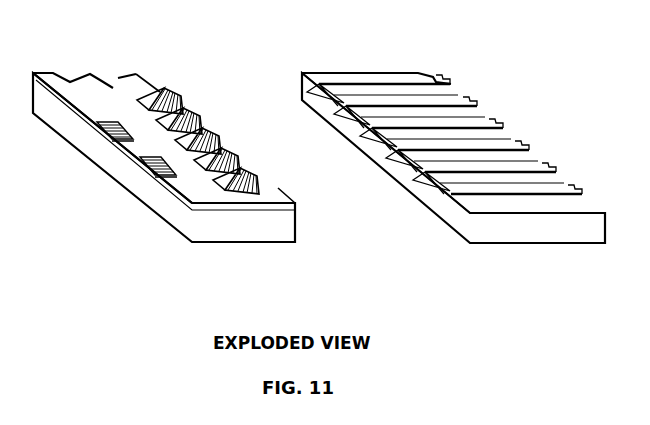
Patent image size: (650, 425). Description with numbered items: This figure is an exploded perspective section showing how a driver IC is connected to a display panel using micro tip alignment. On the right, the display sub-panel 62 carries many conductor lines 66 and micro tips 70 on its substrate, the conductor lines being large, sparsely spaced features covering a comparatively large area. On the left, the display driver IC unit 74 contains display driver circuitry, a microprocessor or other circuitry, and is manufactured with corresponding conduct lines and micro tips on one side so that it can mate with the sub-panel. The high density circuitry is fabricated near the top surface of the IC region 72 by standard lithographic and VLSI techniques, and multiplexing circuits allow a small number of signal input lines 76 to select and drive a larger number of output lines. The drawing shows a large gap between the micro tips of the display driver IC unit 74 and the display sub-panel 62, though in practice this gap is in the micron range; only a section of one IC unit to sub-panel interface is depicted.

The display sub-panel 62 is at (533, 232).
The conductor lines 66 is at (530, 180).
The micro tips 70 is at (322, 88).
The IC region 72 is at (130, 87).
The display driver IC unit 74 is at (178, 215).
The signal input lines 76 is at (143, 170).